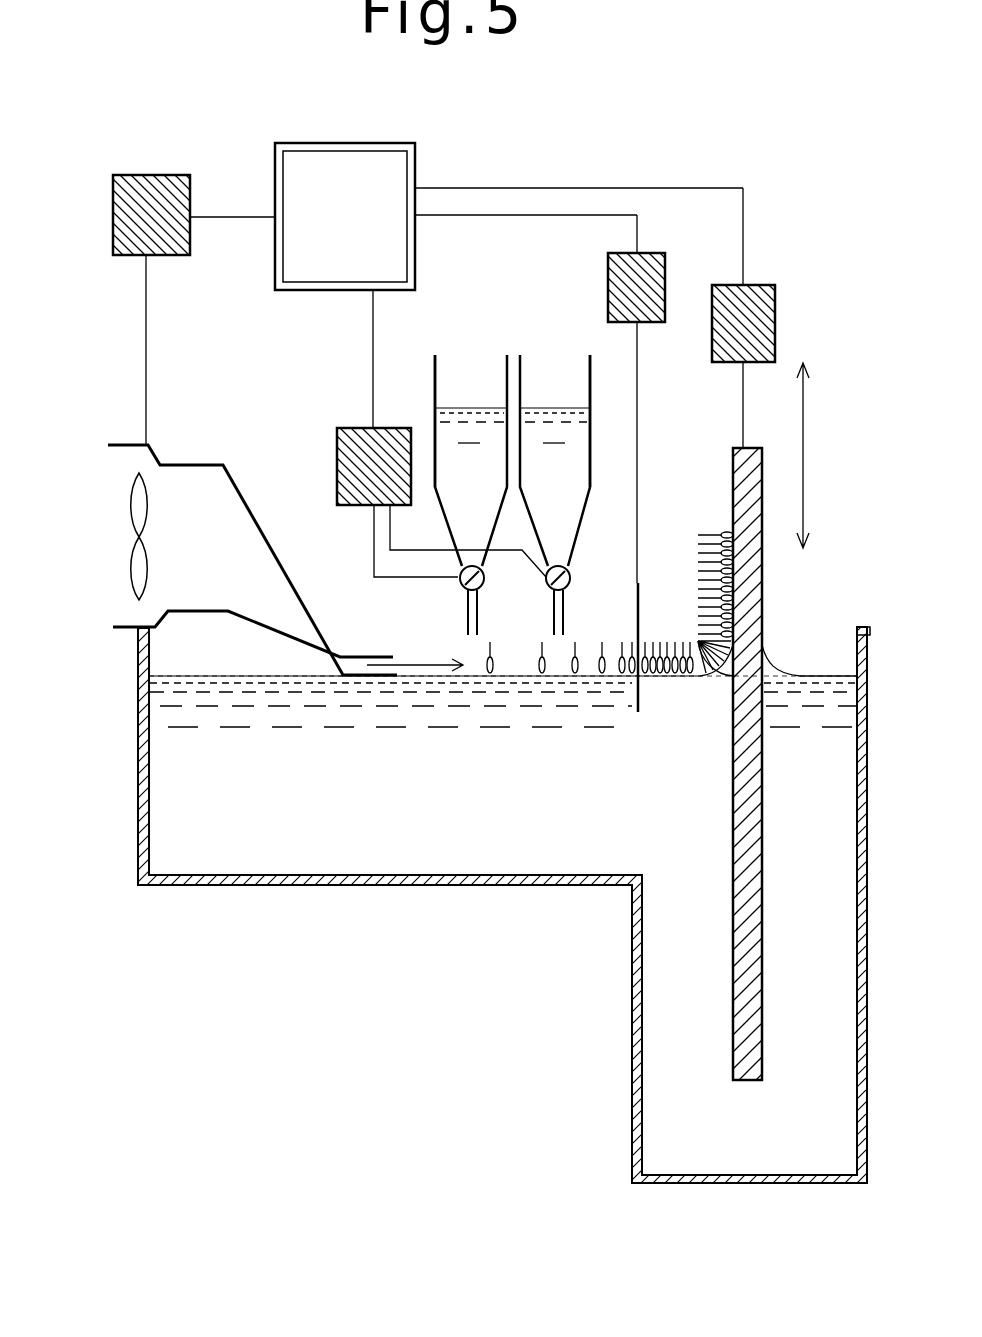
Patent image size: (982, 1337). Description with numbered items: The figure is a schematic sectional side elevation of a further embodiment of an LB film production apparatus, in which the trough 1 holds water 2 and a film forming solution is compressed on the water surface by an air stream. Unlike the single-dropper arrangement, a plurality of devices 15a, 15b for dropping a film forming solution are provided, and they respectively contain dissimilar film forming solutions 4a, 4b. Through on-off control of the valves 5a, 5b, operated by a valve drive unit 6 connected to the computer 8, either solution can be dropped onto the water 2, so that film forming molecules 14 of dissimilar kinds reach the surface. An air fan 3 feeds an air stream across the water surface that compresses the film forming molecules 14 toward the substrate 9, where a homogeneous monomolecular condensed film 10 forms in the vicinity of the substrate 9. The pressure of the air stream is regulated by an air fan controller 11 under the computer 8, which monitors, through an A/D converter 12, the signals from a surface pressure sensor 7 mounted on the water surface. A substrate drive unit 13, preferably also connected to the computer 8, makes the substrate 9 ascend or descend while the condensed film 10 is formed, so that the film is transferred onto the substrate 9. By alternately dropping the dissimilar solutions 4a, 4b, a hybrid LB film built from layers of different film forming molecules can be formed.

The treatment tank 1 is at (318, 880).
The water 2 is at (505, 842).
The air fan 3 is at (120, 632).
The film forming solution 4a is at (468, 425).
The film forming solution 4b is at (552, 425).
The valve 5a is at (462, 587).
The valve 5b is at (548, 587).
The valve drive unit 6 is at (343, 455).
The surface pressure sensor 7 is at (640, 603).
The computer 8 is at (400, 177).
The substrate 9 is at (748, 612).
The monomolecular condensed film 10 is at (678, 630).
The air fan controller 11 is at (125, 205).
The A/D converter 12 is at (655, 282).
The substrate drive unit 13 is at (765, 312).
The film forming molecule 14 is at (618, 635).
The device for dropping a film forming solution 15a is at (435, 388).
The device for dropping a film forming solution 15b is at (590, 388).